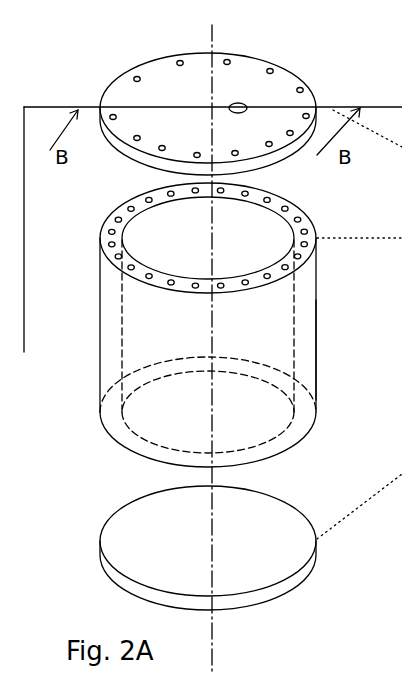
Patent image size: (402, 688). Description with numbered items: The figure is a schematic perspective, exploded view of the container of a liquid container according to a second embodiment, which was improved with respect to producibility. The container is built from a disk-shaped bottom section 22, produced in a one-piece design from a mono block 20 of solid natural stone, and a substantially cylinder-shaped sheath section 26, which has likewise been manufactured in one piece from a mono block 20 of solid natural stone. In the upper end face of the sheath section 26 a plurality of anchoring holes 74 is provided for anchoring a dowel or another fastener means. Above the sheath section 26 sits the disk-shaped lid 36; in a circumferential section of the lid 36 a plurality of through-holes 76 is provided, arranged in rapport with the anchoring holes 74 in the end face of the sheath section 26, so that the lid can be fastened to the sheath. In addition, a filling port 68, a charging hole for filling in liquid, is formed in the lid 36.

The mono block 20 is at (316, 297).
The bottom section 22 is at (318, 552).
The sheath section 26 is at (316, 338).
The lid 36 is at (312, 90).
The filling port 68 is at (240, 103).
The anchoring hole 74 is at (285, 206).
The through-hole 76 is at (274, 74).